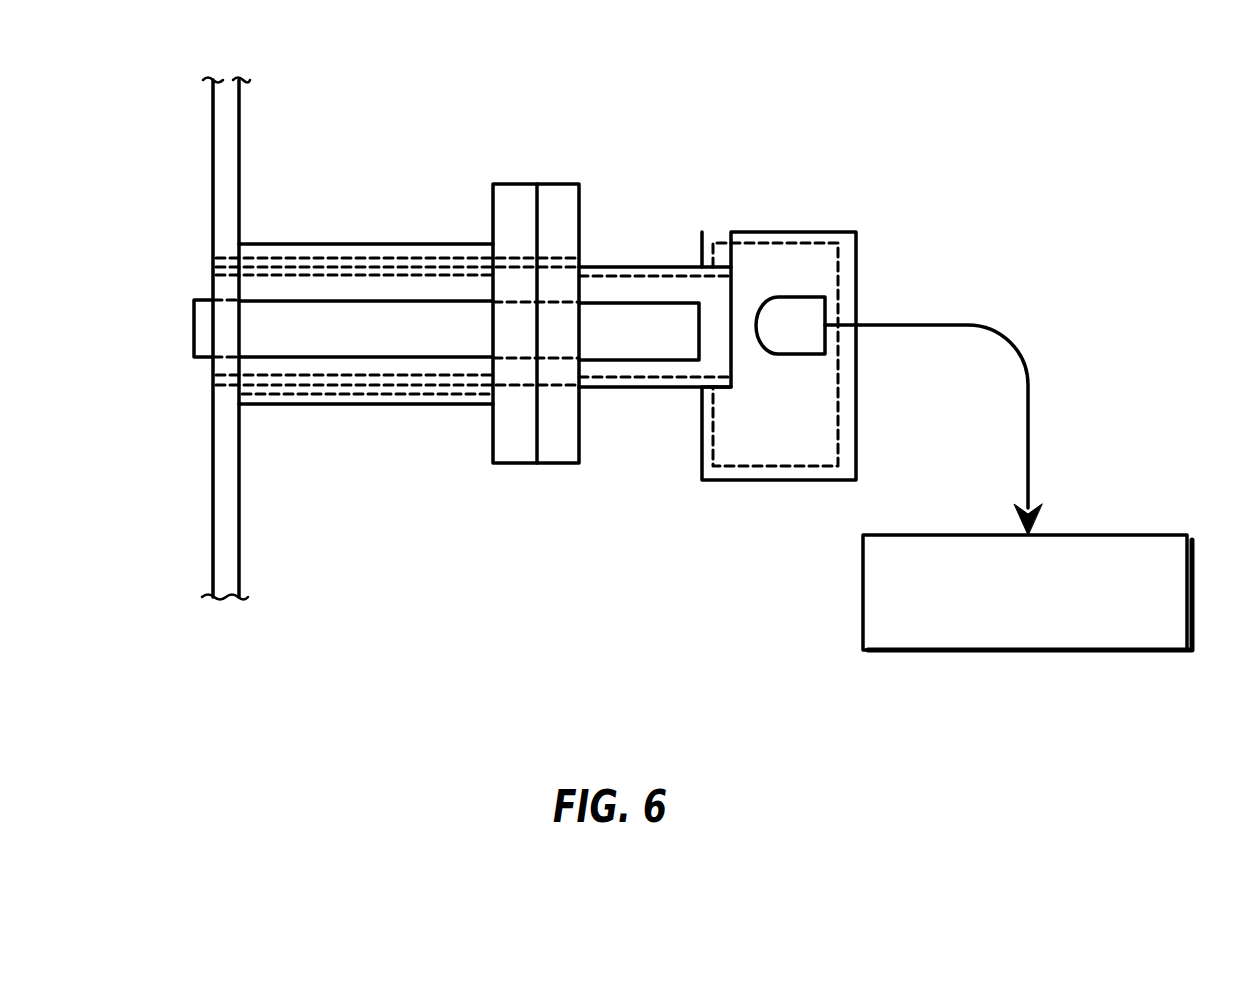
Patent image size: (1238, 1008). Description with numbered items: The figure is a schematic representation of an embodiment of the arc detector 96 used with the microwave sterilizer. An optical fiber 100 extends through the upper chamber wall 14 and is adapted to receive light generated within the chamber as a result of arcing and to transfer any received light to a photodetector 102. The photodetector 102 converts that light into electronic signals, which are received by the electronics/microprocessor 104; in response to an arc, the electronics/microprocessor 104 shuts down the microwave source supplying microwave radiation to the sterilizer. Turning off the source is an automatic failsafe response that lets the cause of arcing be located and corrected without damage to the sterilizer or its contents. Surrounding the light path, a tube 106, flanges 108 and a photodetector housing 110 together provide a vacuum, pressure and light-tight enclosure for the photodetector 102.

The upper chamber wall 14 is at (238, 140).
The arc detector 96 is at (636, 145).
The optical fiber 100 is at (255, 326).
The photodetector 102 is at (828, 308).
The electronics/microprocessor 104 is at (937, 656).
The tube 106 is at (377, 407).
The flanges 108 is at (518, 465).
The photodetector housing 110 is at (787, 482).